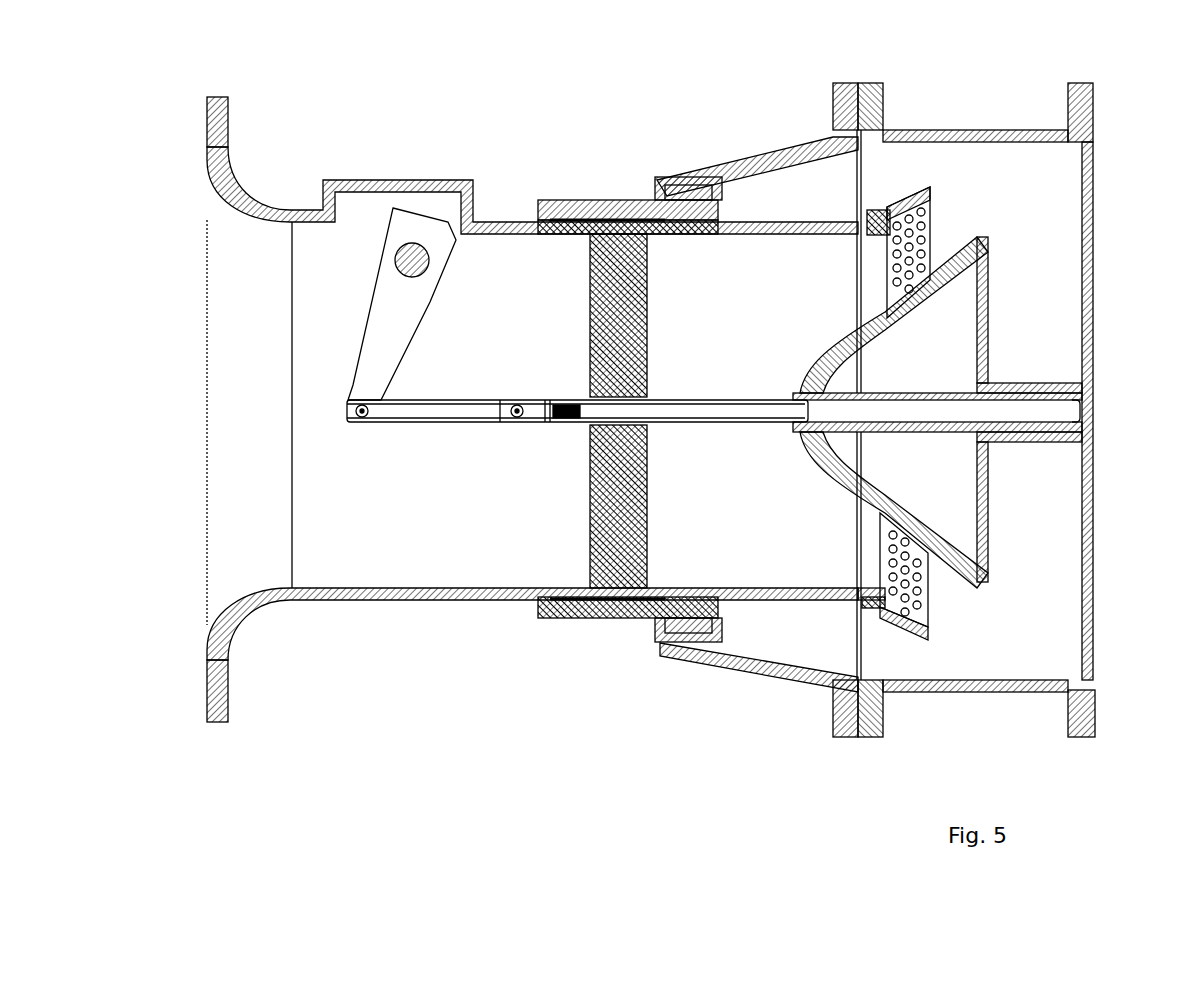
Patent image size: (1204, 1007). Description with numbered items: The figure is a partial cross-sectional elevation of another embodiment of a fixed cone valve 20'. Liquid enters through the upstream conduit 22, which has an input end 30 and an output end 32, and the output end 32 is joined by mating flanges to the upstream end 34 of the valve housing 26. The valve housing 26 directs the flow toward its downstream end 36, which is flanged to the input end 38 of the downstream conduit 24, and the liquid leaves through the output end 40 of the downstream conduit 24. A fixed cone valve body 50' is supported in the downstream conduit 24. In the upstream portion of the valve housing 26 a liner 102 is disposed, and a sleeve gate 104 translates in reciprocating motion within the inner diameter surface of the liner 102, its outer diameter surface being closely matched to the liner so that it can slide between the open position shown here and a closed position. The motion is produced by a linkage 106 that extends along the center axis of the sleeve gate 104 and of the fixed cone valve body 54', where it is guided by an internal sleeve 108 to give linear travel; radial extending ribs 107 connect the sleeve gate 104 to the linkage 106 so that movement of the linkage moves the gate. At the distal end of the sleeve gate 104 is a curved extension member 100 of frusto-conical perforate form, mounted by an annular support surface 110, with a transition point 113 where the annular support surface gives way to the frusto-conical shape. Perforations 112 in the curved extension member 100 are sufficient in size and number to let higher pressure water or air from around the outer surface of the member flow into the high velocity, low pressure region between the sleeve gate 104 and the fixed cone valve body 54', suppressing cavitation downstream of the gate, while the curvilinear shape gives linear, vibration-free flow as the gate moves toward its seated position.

The fixed cone valve 20' is at (477, 71).
The upstream conduit 22 is at (235, 158).
The downstream conduit 24 is at (1000, 692).
The valve housing 26 is at (787, 678).
The input end 30 is at (213, 177).
The output end 32 is at (291, 226).
The upstream end 34 is at (307, 588).
The downstream end 36 is at (852, 148).
The input end 38 is at (872, 150).
The output end 40 is at (1059, 140).
The fixed cone valve body 50' is at (1120, 262).
The fixed cone valve body 54' is at (894, 412).
The curved extension member 100 is at (900, 617).
The liner 102 is at (597, 600).
The sleeve gate 104 is at (720, 585).
The linkage 106 is at (470, 422).
The radial extending ribs 107 is at (590, 322).
The internal sleeve 108 is at (917, 420).
The annular support surface 110 is at (869, 607).
The perforations 112 is at (918, 590).
The transition point 113 is at (876, 212).